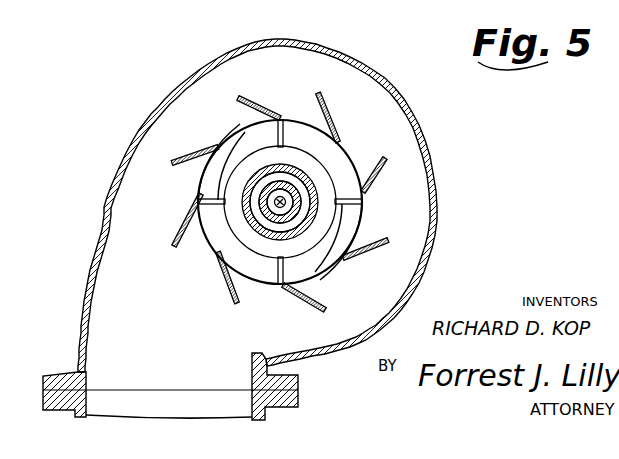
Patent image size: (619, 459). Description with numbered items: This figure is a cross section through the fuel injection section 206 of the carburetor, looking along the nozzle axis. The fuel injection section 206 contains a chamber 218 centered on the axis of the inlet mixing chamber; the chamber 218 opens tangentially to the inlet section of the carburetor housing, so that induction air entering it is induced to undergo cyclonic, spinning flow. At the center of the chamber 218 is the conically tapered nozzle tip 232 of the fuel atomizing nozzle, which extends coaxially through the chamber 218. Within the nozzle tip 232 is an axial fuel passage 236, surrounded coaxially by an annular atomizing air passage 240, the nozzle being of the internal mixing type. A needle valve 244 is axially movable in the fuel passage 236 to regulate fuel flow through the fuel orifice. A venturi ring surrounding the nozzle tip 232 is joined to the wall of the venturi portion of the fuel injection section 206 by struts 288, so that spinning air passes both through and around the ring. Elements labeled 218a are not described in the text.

The fuel injection section 206 is at (265, 221).
The chamber 218 is at (412, 146).
The guide vanes 218a is at (320, 83).
The nozzle tip 232 is at (284, 200).
The fuel passage 236 is at (279, 222).
The annular atomizing air passage 240 is at (261, 215).
The needle valve 244 is at (308, 176).
The struts 288 is at (275, 133).